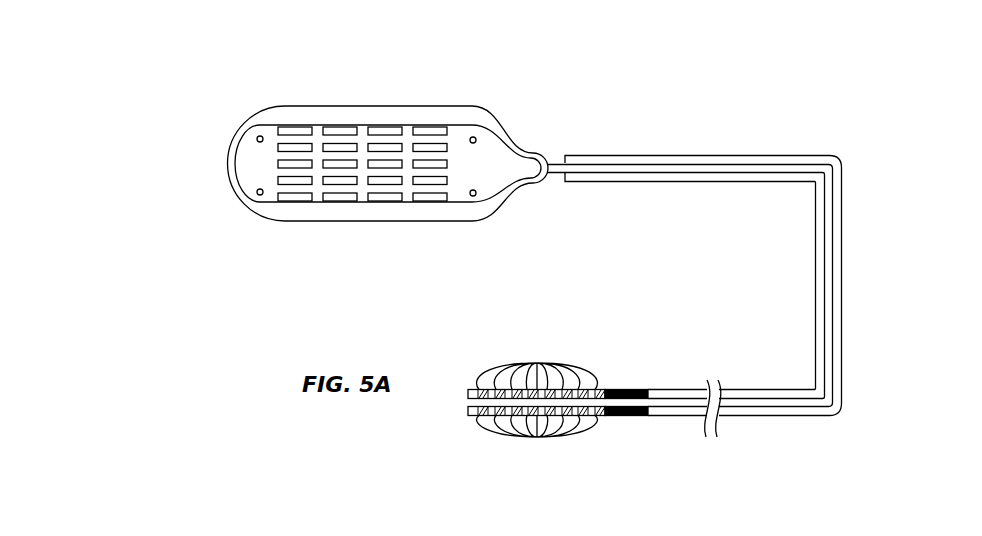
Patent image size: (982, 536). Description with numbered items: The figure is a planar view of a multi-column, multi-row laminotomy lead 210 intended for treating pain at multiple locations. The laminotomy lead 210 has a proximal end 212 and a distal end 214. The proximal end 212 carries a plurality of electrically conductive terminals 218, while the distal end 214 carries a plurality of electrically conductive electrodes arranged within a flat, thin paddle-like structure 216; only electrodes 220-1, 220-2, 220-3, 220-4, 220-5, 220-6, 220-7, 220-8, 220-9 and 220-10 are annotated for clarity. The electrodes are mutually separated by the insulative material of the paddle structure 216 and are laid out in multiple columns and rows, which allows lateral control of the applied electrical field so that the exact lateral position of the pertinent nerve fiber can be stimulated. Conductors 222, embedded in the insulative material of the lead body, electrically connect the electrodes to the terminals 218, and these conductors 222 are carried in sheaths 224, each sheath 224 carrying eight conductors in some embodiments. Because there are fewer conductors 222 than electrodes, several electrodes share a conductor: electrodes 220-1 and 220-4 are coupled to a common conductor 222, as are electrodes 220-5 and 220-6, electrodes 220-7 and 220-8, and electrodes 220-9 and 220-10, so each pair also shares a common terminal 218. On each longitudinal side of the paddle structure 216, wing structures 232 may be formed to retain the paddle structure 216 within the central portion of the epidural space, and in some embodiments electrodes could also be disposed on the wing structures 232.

The laminotomy lead 210 is at (757, 43).
The proximal end 212 is at (458, 429).
The distal end 214 is at (267, 287).
The paddle structure 216 is at (138, 75).
The terminals 218 is at (537, 363).
The electrode 220-1 is at (297, 201).
The electrode 220-2 is at (278, 180).
The electrode 220-3 is at (278, 164).
The electrode 220-4 is at (345, 201).
The electrode 220-5 is at (390, 201).
The electrode 220-6 is at (437, 201).
The electrode 220-7 is at (292, 127).
The electrode 220-8 is at (342, 127).
The electrode 220-9 is at (383, 127).
The electrode 220-10 is at (434, 127).
The conductors 222 is at (623, 388).
The sheath 224 is at (822, 323).
The wing structure 232 is at (247, 122).